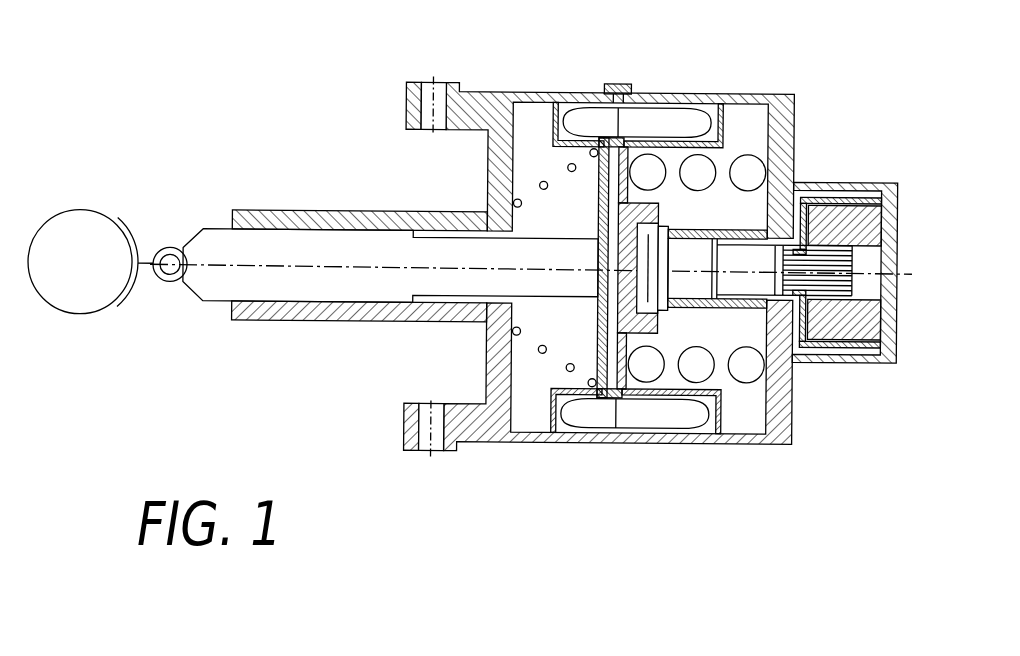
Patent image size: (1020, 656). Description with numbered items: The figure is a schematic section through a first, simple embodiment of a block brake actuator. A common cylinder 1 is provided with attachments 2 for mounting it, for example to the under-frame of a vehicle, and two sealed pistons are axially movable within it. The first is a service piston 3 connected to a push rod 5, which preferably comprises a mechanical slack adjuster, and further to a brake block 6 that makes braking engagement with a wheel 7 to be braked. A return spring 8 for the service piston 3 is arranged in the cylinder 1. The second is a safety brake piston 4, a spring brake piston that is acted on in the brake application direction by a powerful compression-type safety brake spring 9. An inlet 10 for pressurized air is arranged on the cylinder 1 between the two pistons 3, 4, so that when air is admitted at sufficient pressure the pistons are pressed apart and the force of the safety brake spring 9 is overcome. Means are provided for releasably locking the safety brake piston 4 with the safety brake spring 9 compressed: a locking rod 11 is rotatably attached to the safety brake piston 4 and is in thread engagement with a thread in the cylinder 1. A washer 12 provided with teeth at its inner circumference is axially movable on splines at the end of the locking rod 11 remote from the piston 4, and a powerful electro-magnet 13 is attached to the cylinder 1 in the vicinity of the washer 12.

The cylinder 1 is at (540, 443).
The attachments 2 is at (453, 82).
The service piston 3 is at (550, 102).
The safety brake piston 4 is at (716, 105).
The push rod 5 is at (274, 216).
The brake block 6 is at (130, 226).
The wheel 7 is at (78, 230).
The return spring 8 is at (541, 181).
The safety brake spring 9 is at (748, 158).
The inlet 10 is at (617, 80).
The locking rod 11 is at (752, 258).
The washer 12 is at (823, 345).
The electro-magnet 13 is at (870, 337).